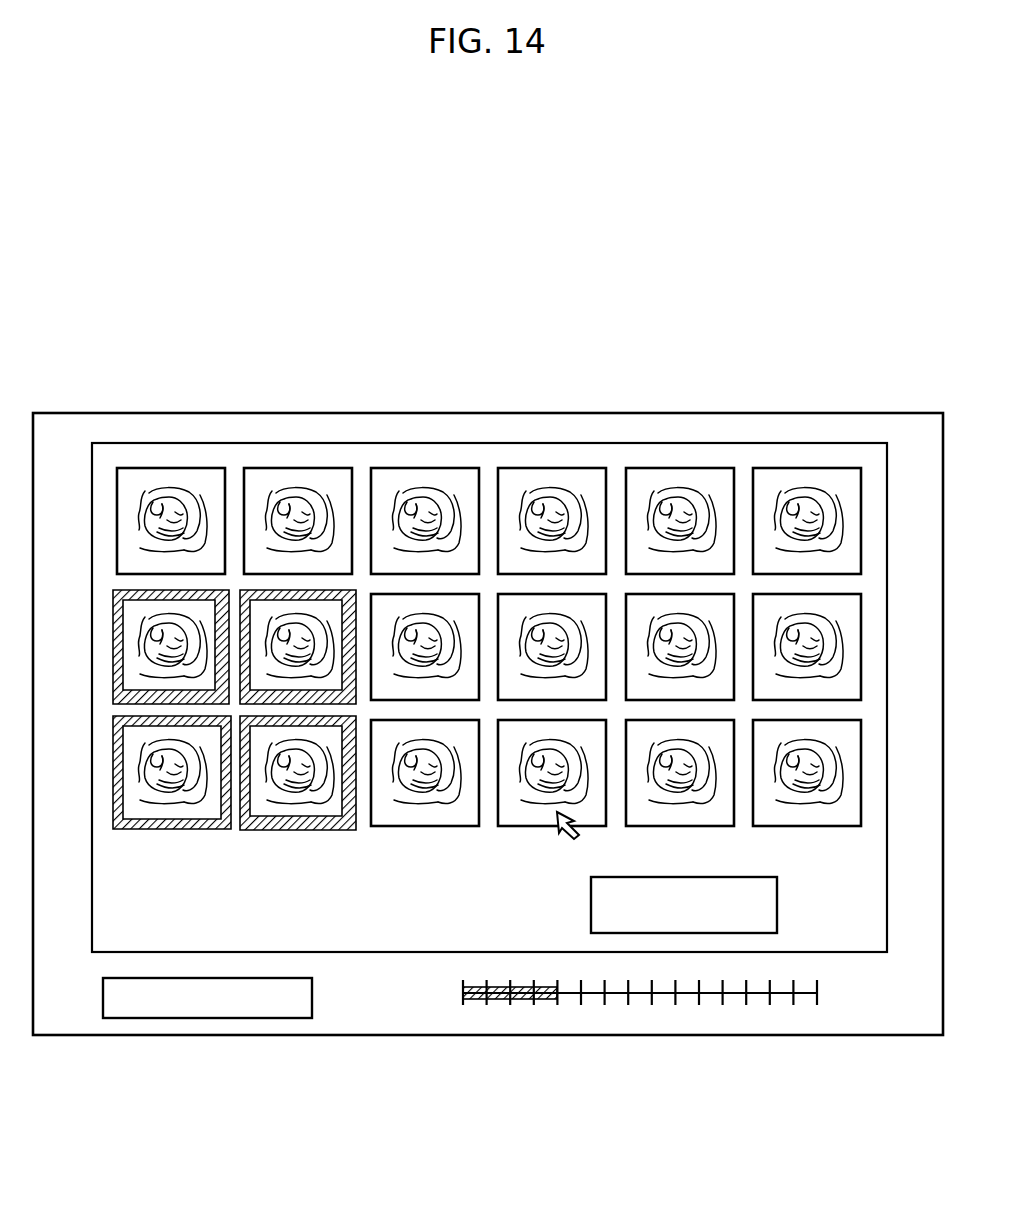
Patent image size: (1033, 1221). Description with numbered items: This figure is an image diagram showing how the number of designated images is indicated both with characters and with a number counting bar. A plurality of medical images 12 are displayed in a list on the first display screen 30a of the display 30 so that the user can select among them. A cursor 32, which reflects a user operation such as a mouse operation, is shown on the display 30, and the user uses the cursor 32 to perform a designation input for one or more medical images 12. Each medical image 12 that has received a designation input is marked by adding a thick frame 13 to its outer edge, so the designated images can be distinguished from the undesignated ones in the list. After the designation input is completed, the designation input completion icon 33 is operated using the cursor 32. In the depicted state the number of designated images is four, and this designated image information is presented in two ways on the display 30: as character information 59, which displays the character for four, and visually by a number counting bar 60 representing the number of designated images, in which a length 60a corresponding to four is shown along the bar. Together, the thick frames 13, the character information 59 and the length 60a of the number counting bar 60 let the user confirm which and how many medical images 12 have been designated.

The display 30 is at (62, 1037).
The first display screen 30a is at (345, 443).
The medical image 12 is at (172, 811).
The thick frame 13 is at (222, 829).
The cursor 32 is at (578, 832).
The designation input completion icon 33 is at (777, 905).
The character information 59 is at (313, 998).
The number counting bar 60 is at (641, 1027).
The length 60a is at (505, 999).